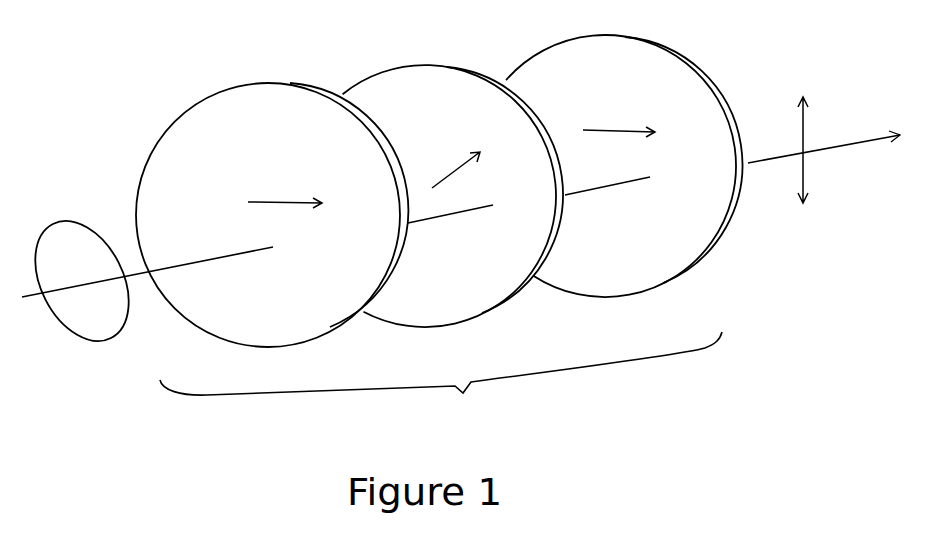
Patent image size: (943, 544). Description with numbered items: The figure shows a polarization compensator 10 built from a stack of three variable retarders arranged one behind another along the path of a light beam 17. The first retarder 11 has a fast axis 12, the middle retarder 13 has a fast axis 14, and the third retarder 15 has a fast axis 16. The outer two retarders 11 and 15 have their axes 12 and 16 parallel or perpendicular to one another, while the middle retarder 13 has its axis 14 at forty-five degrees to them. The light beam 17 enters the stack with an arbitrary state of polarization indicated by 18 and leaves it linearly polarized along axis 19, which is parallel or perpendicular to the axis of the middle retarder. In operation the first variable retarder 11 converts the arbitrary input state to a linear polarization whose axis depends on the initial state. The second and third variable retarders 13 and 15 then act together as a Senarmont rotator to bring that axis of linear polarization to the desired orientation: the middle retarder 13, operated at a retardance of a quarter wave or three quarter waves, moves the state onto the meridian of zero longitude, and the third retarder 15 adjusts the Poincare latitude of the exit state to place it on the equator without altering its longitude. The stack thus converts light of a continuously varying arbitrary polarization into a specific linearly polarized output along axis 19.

The polarization compensator 10 is at (441, 379).
The retarder 11 is at (216, 94).
The fast axis 12 is at (284, 188).
The retarder 13 is at (378, 73).
The fast axis 14 is at (457, 169).
The retarder 15 is at (556, 47).
The fast axis 16 is at (637, 130).
The light beam 17 is at (835, 150).
The arbitrary state of polarization 18 is at (80, 220).
The axis of linear polarization 19 is at (800, 116).